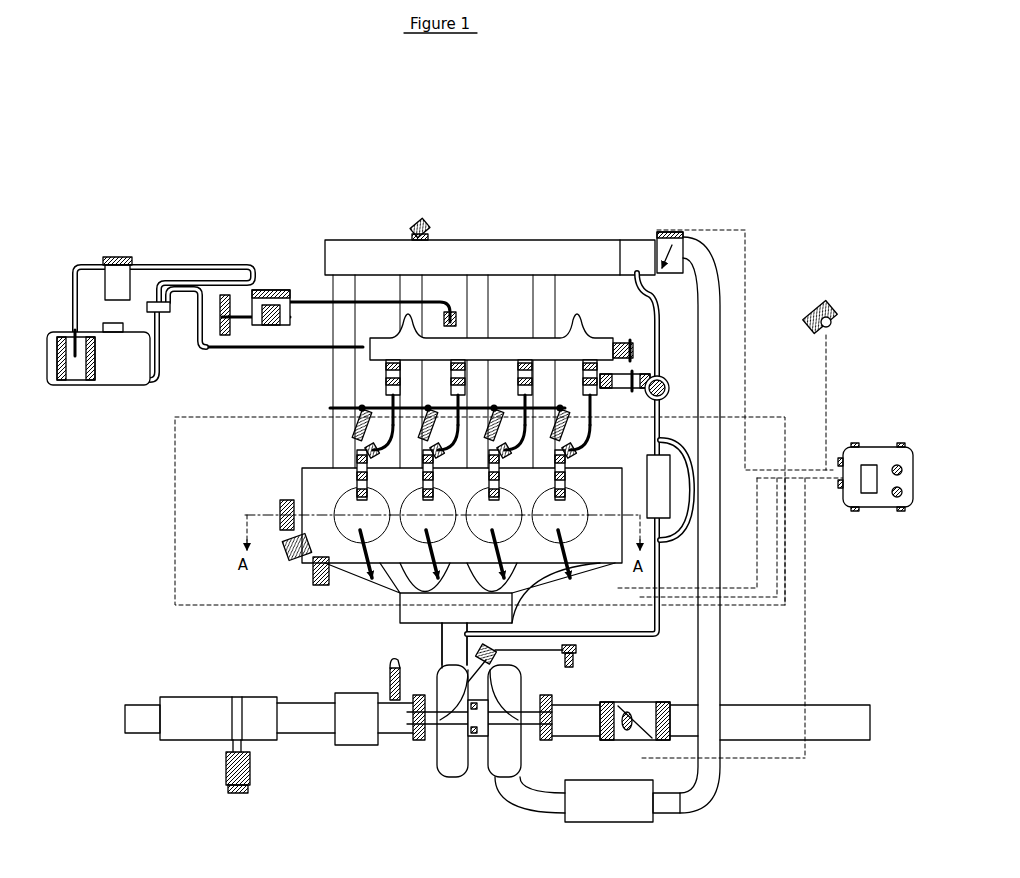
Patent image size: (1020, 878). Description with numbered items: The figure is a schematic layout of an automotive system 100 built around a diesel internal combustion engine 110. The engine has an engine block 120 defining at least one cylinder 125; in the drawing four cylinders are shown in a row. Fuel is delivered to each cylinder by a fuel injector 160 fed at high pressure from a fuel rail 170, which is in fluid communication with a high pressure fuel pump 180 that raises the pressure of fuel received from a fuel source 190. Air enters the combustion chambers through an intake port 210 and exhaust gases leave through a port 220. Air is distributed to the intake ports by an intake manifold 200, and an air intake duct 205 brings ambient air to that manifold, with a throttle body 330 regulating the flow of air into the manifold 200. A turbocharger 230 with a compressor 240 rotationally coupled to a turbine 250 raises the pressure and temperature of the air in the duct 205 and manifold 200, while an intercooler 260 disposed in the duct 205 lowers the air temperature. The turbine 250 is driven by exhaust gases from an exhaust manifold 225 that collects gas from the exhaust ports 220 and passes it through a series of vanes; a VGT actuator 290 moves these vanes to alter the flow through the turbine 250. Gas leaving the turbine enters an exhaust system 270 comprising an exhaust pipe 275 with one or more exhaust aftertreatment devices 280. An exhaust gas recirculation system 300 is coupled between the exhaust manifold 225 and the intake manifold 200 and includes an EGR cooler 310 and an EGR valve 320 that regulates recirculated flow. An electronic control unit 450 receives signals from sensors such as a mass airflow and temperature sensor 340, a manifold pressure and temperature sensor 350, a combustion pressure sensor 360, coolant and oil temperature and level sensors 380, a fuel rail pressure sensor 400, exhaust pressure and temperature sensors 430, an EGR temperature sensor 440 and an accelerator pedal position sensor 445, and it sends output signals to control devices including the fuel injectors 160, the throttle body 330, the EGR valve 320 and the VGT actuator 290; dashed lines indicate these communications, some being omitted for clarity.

The automotive system 100 is at (235, 226).
The internal combustion engine 110 is at (570, 232).
The engine block 120 is at (303, 472).
The cylinder 125 is at (583, 493).
The fuel injector 160 is at (345, 450).
The fuel rail 170 is at (365, 352).
The high pressure fuel pump 180 is at (265, 285).
The fuel source 190 is at (120, 372).
The intake manifold 200 is at (490, 258).
The air intake duct 205 is at (836, 725).
The intake port 210 is at (333, 470).
The exhaust port 220 is at (355, 563).
The exhaust manifold 225 is at (430, 617).
The turbocharger 230 is at (469, 729).
The compressor 240 is at (505, 750).
The turbine 250 is at (448, 743).
The intercooler 260 is at (633, 808).
The exhaust system 270 is at (240, 734).
The exhaust pipe 275 is at (140, 720).
The exhaust aftertreatment device 280 is at (188, 720).
The VGT actuator 290 is at (495, 652).
The exhaust gas recirculation system 300 is at (630, 645).
The EGR cooler 310 is at (660, 505).
The EGR valve 320 is at (657, 378).
The throttle body 330 is at (663, 232).
The mass airflow and temperature sensor 340 is at (650, 740).
The manifold pressure and temperature sensor 350 is at (420, 228).
The combustion pressure sensor 360 is at (373, 580).
The coolant and oil temperature and level sensors 380 is at (318, 580).
The fuel rail pressure sensor 400 is at (668, 352).
The exhaust pressure and temperature sensors 430 is at (304, 745).
The EGR temperature sensor 440 is at (605, 428).
The accelerator pedal position sensor 445 is at (828, 300).
The electronic control unit 450 is at (878, 445).